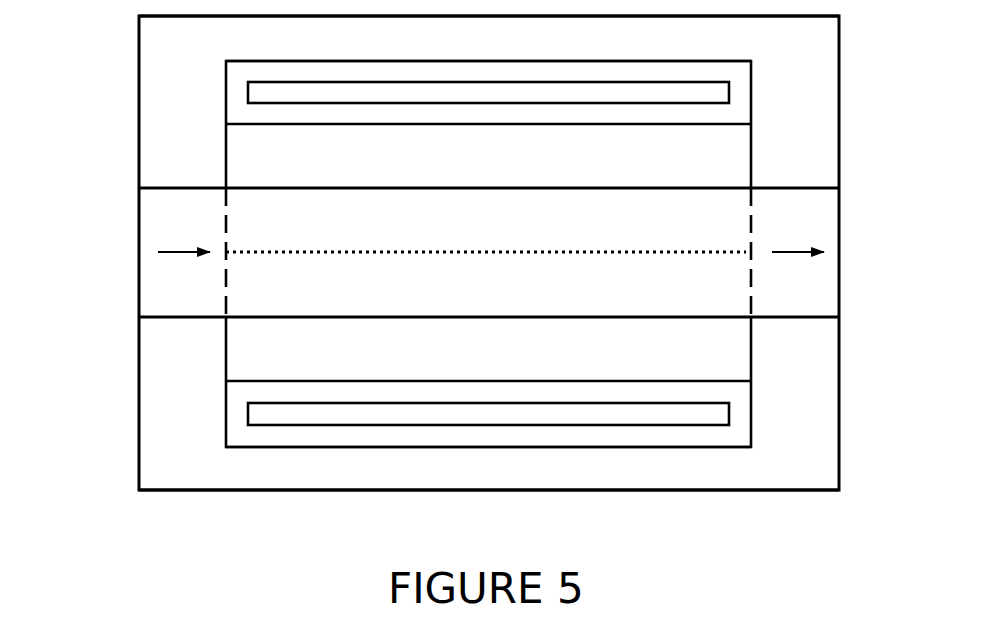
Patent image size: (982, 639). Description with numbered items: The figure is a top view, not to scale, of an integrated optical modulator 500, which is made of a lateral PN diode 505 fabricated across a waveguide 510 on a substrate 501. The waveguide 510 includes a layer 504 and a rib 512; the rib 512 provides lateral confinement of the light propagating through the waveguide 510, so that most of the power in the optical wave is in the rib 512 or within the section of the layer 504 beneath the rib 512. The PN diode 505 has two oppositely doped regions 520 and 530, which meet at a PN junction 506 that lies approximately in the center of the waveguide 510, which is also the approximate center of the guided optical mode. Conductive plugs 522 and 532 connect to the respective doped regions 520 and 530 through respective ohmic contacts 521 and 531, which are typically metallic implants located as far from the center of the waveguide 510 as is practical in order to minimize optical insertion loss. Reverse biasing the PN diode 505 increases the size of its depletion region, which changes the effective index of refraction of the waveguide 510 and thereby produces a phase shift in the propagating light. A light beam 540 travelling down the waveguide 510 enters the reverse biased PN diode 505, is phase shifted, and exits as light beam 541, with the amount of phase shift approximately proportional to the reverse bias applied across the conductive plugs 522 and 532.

The optical modulator 500 is at (150, 513).
The substrate 501 is at (118, 55).
The layer 504 is at (213, 62).
The lateral PN diode 505 is at (275, 513).
The PN junction 506 is at (433, 252).
The waveguide 510 is at (115, 247).
The rib 512 is at (204, 234).
The doped region 520 is at (300, 171).
The ohmic contact 521 is at (238, 72).
The conductive plug 522 is at (245, 93).
The doped region 530 is at (300, 362).
The ohmic contact 531 is at (237, 393).
The conductive plug 532 is at (246, 413).
The light beam 540 is at (180, 253).
The light beam 541 is at (800, 252).